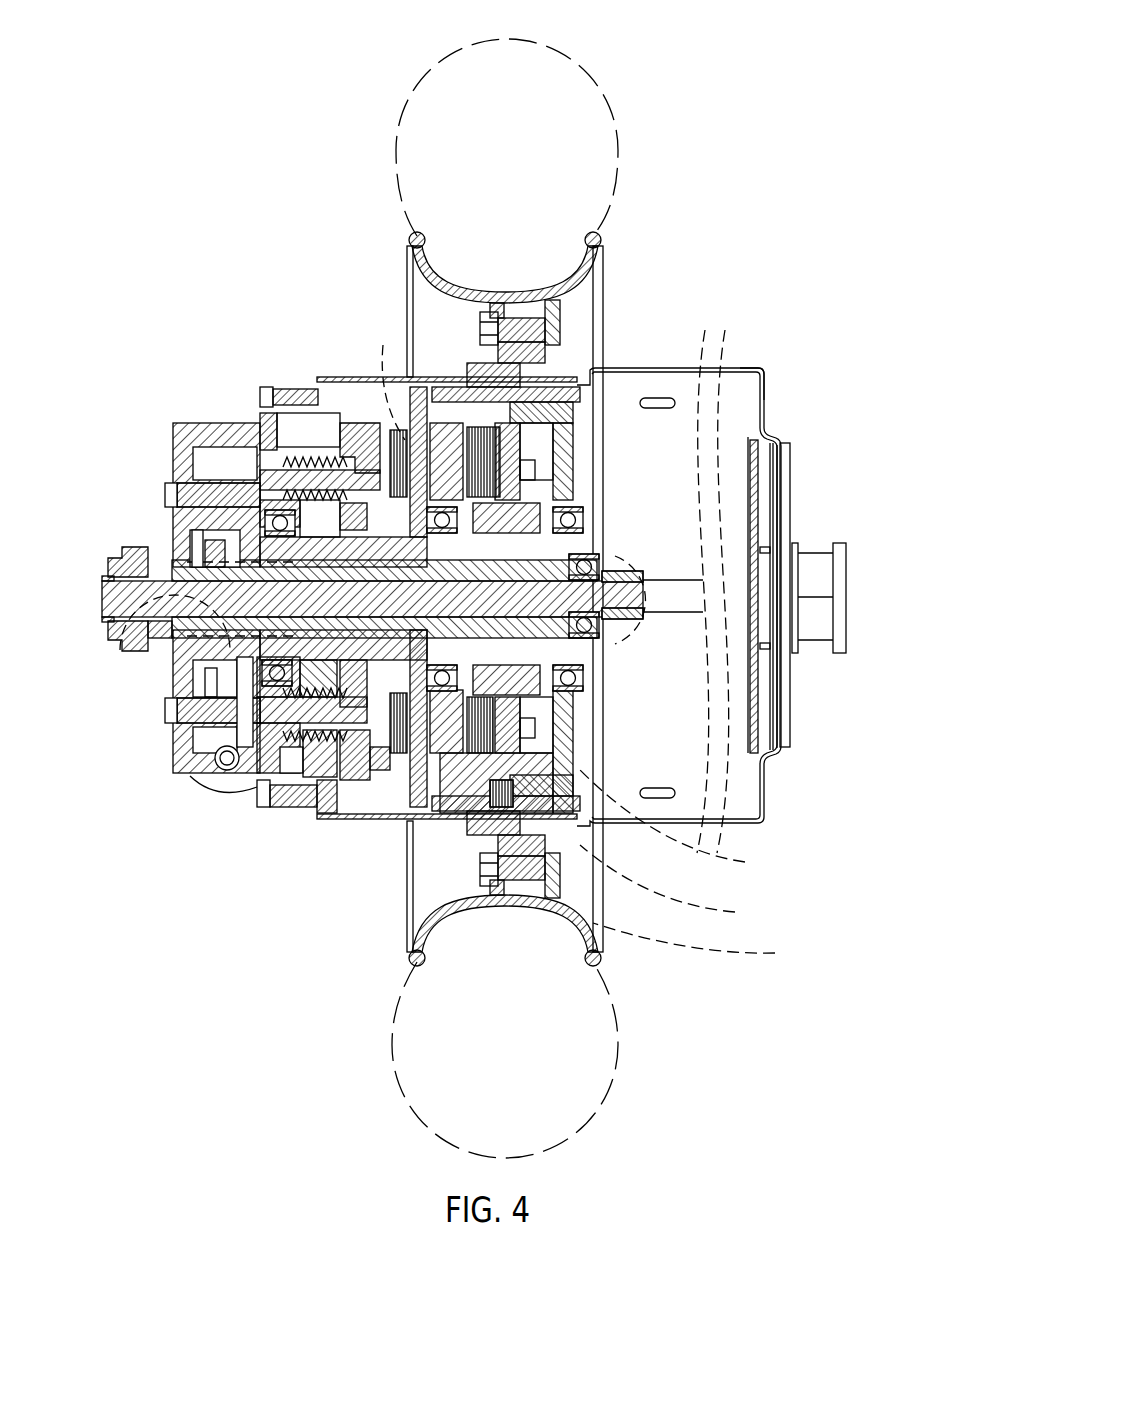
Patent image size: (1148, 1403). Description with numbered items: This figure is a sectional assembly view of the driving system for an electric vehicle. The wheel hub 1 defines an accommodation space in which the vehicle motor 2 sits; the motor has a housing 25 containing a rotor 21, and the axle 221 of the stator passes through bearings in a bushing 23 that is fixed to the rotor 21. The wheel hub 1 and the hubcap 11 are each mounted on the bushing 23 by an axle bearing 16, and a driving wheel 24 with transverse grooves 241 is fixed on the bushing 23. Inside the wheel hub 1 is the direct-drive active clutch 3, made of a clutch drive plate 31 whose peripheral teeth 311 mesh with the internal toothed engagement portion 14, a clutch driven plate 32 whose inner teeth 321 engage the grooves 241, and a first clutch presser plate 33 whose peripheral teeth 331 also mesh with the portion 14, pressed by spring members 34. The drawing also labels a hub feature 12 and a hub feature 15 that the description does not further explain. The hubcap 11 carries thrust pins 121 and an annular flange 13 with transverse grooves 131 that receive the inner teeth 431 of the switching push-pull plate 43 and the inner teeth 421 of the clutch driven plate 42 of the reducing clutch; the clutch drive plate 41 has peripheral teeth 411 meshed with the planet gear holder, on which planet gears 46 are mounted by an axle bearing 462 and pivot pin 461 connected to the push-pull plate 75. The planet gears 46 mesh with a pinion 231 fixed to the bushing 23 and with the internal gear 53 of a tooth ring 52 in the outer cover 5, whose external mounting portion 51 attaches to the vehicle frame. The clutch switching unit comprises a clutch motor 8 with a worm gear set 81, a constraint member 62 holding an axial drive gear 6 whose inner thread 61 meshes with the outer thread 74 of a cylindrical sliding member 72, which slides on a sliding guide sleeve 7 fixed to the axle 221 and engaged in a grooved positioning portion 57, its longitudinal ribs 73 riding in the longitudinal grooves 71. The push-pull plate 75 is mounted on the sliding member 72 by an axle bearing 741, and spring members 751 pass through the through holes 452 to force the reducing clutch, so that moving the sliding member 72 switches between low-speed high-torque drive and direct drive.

The wheel hub 1 is at (578, 300).
The hubcap 11 is at (447, 352).
The rim hub neck 12 is at (467, 340).
The thrust pins 121 is at (416, 232).
The annular flange 13 is at (540, 825).
The transverse grooves 131 is at (447, 795).
The internal toothed engagement portion 14 is at (673, 885).
The rim side flange 15 is at (598, 255).
The axle bearing 16 is at (565, 660).
The vehicle motor 2 is at (745, 352).
The rotor 21 is at (727, 457).
The axle 221 is at (620, 600).
The bushing 23 is at (585, 720).
The pinion 231 is at (263, 705).
The driving wheel 24 is at (590, 530).
The transverse grooves 241 is at (590, 503).
The housing 25 is at (765, 380).
The direct-drive active clutch 3 is at (505, 342).
The clutch drive plate 31 is at (600, 710).
The radially extending peripheral teeth 311 is at (597, 655).
The clutch driven plate 32 is at (527, 330).
The inner teeth 321 is at (533, 523).
The first clutch presser plate 33 is at (580, 453).
The radially extending peripheral teeth 331 is at (681, 822).
The spring members 34 is at (570, 352).
The clutch drive plate 41 is at (365, 405).
The radially extending peripheral teeth 411 is at (393, 400).
The clutch driven plate 42 is at (420, 793).
The inner teeth 421 is at (455, 770).
The inner teeth 431 is at (500, 795).
The switching push-pull plate 43 is at (406, 860).
The through holes 452 is at (300, 458).
The planet gears 46 is at (285, 790).
The pivot pin 461 is at (262, 770).
The axle bearing 462 is at (292, 800).
The outer cover 5 is at (177, 440).
The external mounting portion 51 is at (150, 545).
The tooth ring 52 is at (305, 420).
The internal gear 53 is at (343, 395).
The grooved positioning portion 57 is at (162, 492).
The axial drive gear 6 is at (175, 695).
The inner thread 61 is at (200, 495).
The constraint member 62 is at (195, 425).
The sliding guide sleeve 7 is at (185, 657).
The longitudinal grooves 71 is at (177, 487).
The cylindrical sliding member 72 is at (250, 462).
The longitudinal ribs 73 is at (118, 652).
The outer thread 74 is at (232, 440).
The push-pull plate 75 is at (290, 470).
The spring members 751 is at (320, 500).
The clutch motor 8 is at (210, 782).
The worm gear set 81 is at (200, 760).
The axle bearing 741 is at (232, 762).